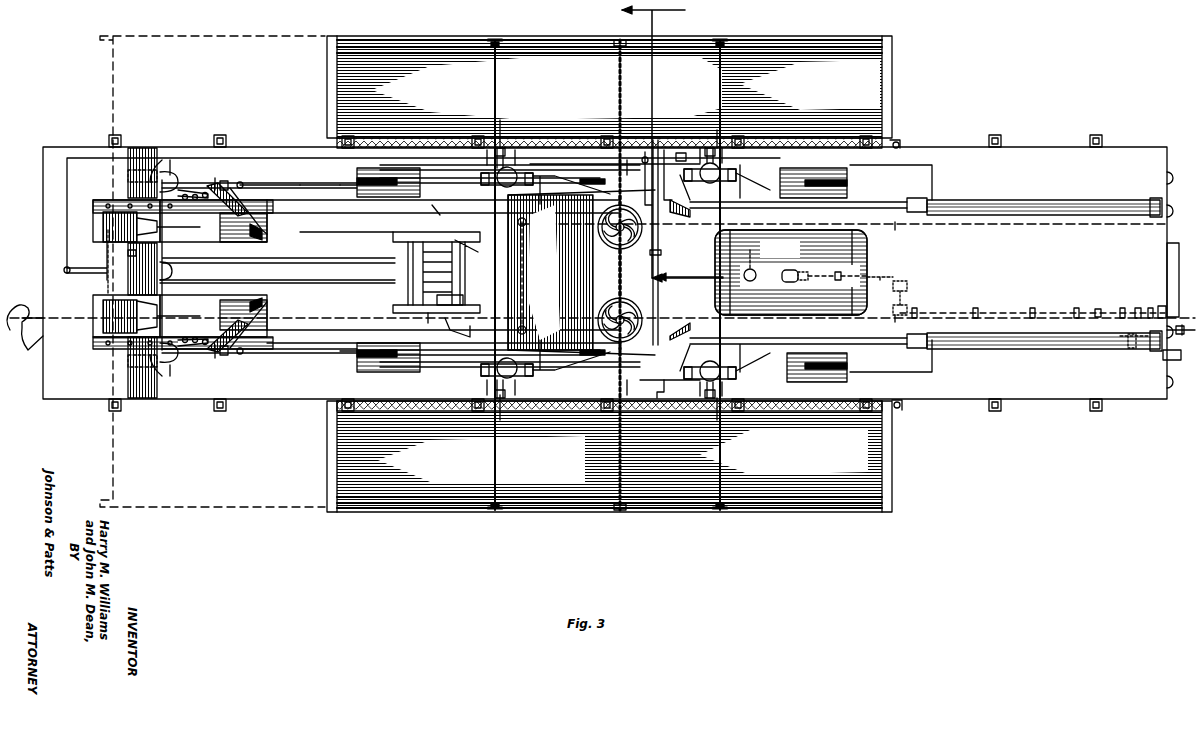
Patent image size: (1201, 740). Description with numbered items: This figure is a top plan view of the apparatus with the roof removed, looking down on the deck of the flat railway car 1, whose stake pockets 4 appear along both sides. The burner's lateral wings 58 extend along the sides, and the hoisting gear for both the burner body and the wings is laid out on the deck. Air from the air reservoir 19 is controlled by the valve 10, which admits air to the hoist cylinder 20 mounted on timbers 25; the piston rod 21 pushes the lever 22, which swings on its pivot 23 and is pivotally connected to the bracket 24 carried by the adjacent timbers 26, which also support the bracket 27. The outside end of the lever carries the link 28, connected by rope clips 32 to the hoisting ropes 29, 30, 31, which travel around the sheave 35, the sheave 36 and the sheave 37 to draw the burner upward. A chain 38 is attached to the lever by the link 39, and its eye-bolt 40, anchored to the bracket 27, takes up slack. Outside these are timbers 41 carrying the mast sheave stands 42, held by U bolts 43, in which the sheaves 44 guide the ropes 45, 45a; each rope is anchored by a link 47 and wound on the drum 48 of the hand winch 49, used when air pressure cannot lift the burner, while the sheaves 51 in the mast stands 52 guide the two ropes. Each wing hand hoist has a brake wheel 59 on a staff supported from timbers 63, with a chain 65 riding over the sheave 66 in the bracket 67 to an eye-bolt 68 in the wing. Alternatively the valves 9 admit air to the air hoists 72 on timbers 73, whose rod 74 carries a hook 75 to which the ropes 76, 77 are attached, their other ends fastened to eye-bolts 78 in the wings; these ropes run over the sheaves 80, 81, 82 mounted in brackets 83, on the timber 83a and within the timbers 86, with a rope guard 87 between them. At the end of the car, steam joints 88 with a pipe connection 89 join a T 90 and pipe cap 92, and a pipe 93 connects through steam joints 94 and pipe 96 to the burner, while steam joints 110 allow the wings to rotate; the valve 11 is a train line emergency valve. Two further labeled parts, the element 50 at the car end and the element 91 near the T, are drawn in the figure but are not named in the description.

The body of railway car 1 is at (611, 273).
The stake pockets 4 is at (1000, 411).
The valves 9 is at (664, 392).
The valve 10 is at (645, 152).
The valve 11 is at (681, 153).
The air reservoir 19 is at (791, 272).
The hoist cylinder 20 is at (107, 253).
The piston rod 21 is at (186, 296).
The lever 22 is at (240, 350).
The pivot 23 is at (262, 316).
The bracket 24 is at (268, 320).
The timbers 25 is at (213, 296).
The timbers 26 is at (330, 304).
The bracket 27 is at (100, 330).
The link 28 is at (225, 356).
The hoisting rope 29 is at (262, 356).
The hoisting rope 30 is at (288, 356).
The hoisting rope 31 is at (314, 356).
The rope clips 32 is at (241, 356).
The sheave 35 is at (378, 372).
The sheave 36 is at (583, 368).
The sheave 37 is at (828, 378).
The chain 38 is at (175, 273).
The link 39 is at (195, 273).
The eye-bolt 40 is at (116, 340).
The timbers 41 is at (128, 382).
The mast sheave stands 42 is at (160, 378).
The U bolts 43 is at (128, 361).
The sheaves 44 is at (172, 378).
The rope 45 is at (200, 160).
The rope 45a is at (308, 280).
The link 47 is at (215, 358).
The drum 48 is at (440, 273).
The hand winch 49 is at (490, 312).
The bracket 50 is at (1178, 360).
The sheaves 51 is at (174, 271).
The mast stands 52 is at (150, 252).
The lateral wings 58 is at (609, 274).
The brake wheel 59 is at (630, 298).
The timbers 63 is at (581, 272).
The chain 65 is at (622, 470).
The sheave 66 is at (625, 387).
The bracket 67 is at (627, 395).
The eye-bolt 68 is at (620, 508).
The air hoists 72 is at (1000, 350).
The timbers 73 is at (870, 340).
The rod 74 is at (885, 345).
The hook 75 is at (892, 218).
The rope 76 is at (496, 444).
The rope 77 is at (721, 447).
The eye-bolts 78 is at (720, 508).
The sheave 80 is at (728, 385).
The sheave 81 is at (710, 333).
The sheaves 82 is at (659, 308).
The brackets 83 is at (750, 168).
The timber 83a is at (894, 388).
The timbers 86 is at (740, 388).
The rope guard 87 is at (718, 420).
The steam joints 88 is at (1130, 340).
The pipe connection 89 is at (1130, 350).
The T 90 is at (1138, 310).
The valve 91 is at (1160, 306).
The pipe cap 92 is at (1181, 332).
The pipe 93 is at (1005, 312).
The steam joints 94 is at (800, 265).
The pipe 96 is at (880, 276).
The steam joints 110 is at (898, 410).